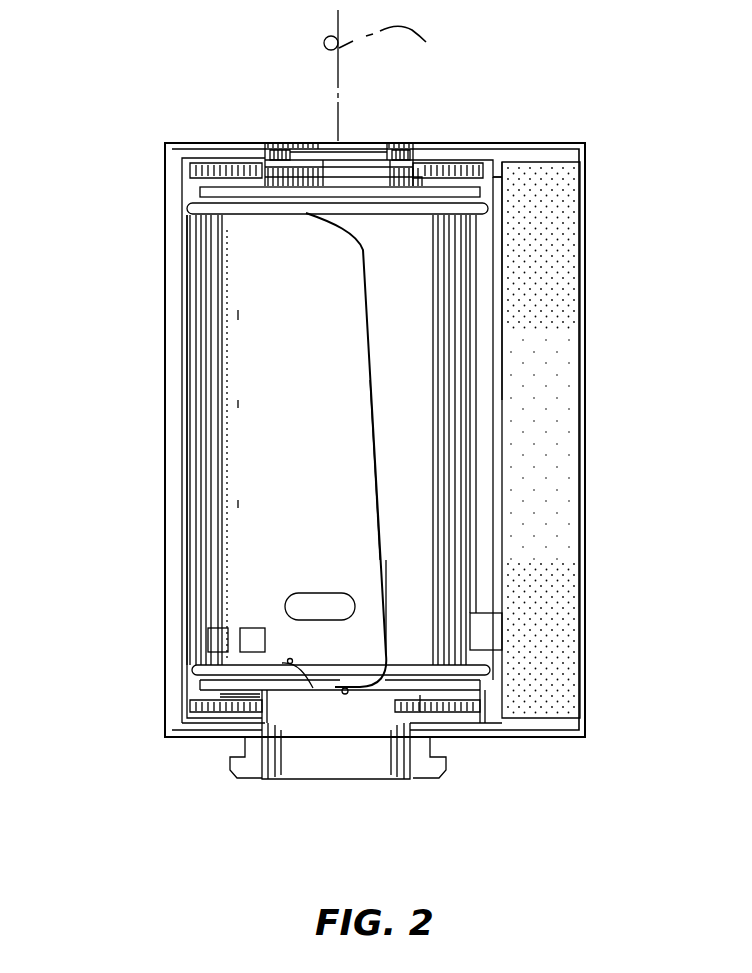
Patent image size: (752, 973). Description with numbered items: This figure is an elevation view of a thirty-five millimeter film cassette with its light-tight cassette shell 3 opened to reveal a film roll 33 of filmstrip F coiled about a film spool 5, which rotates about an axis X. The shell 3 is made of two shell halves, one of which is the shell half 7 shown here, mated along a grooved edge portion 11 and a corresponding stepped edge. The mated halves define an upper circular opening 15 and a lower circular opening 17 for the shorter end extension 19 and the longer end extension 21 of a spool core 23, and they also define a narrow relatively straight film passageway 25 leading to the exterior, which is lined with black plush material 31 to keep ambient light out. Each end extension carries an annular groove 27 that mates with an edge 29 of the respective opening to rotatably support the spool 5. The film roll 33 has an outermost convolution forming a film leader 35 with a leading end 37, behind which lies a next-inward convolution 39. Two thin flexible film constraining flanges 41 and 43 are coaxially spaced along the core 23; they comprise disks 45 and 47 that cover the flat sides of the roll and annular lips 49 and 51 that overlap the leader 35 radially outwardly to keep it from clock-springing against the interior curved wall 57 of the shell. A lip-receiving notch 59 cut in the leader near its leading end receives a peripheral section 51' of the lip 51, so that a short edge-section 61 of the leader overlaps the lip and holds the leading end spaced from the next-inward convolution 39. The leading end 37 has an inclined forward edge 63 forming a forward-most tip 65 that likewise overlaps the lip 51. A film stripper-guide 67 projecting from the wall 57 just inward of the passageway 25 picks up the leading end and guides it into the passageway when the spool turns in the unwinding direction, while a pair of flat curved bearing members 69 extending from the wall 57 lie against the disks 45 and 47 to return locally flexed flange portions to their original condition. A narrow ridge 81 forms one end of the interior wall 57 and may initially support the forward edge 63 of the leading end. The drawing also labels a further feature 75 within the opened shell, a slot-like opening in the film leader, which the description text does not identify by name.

The cassette shell 3 is at (218, 139).
The film spool 5 is at (200, 504).
The shell half 7 is at (183, 141).
The grooved edge portion 11 is at (179, 258).
The upper circular opening 15 is at (399, 148).
The lower circular opening 17 is at (412, 742).
The shorter end extension 19 is at (282, 140).
The longer end extension 21 is at (278, 783).
The spool core 23 is at (287, 139).
The film passageway 25 is at (583, 325).
The annular groove 27 is at (315, 160).
The opening edge 29 is at (388, 150).
The plush material 31 is at (540, 215).
The film roll 33 is at (200, 460).
The film leader 35 is at (210, 388).
The leading end 37 is at (378, 472).
The next-inward convolution 39 is at (440, 385).
The upper film constraining flange 41 is at (190, 191).
The lower film constraining flange 43 is at (195, 684).
The disk 45 is at (452, 186).
The disk 47 is at (447, 695).
The annular lip 49 is at (466, 183).
The annular lip 51 is at (491, 730).
The peripheral lip section 51' is at (298, 721).
The interior curved wall 57 is at (194, 322).
The lip-receiving notch 59 is at (280, 660).
The edge-section 61 is at (345, 688).
The forward edge 63 is at (371, 375).
The forward-most tip 65 is at (383, 606).
The film stripper-guide 67 is at (470, 615).
The bearing member 69 is at (200, 174).
The slot 75 is at (323, 600).
The narrow ridge 81 is at (496, 493).
The filmstrip F is at (237, 540).
The axis X is at (382, 75).